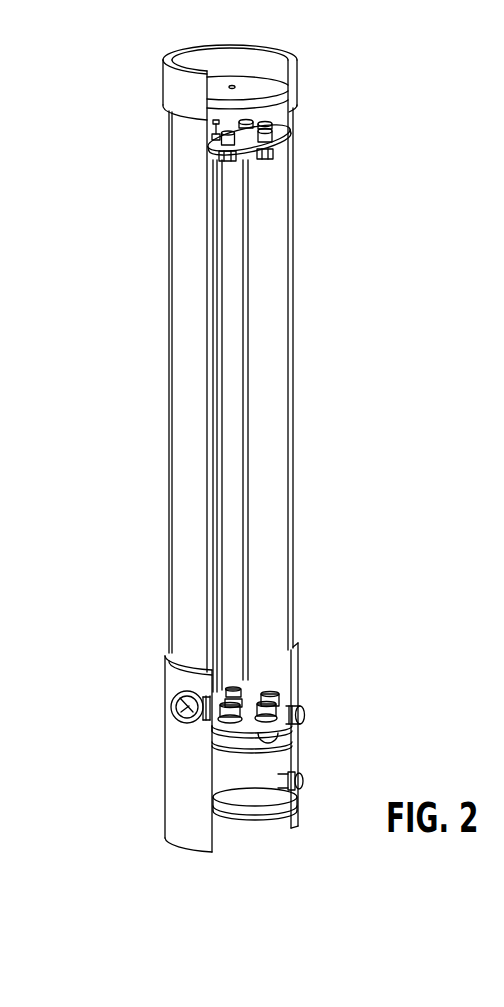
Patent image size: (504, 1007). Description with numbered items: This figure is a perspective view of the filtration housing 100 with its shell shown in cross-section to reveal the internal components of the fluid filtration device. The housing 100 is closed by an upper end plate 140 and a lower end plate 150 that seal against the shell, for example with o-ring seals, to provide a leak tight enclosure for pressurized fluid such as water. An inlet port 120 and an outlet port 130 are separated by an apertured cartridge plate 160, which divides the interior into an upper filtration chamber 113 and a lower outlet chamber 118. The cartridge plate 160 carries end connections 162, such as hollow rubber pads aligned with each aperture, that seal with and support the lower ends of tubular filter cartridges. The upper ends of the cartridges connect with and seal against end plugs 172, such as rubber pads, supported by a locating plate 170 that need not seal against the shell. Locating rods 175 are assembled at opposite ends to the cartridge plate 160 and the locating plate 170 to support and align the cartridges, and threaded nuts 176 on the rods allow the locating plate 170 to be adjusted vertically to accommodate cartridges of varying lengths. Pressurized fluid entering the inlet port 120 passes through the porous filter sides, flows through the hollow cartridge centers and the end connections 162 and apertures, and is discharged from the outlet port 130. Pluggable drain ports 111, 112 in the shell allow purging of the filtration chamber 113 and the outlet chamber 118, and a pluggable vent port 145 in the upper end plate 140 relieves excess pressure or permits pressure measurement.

The filtration housing 100 is at (400, 247).
The drain port 111 is at (301, 712).
The drain port 112 is at (302, 783).
The upper filtration chamber 113 is at (267, 473).
The lower outlet chamber 118 is at (240, 753).
The inlet port 120 is at (171, 726).
The outlet port 130 is at (262, 750).
The upper end plate 140 is at (278, 88).
The vent port 145 is at (234, 85).
The lower end plate 150 is at (268, 804).
The cartridge plate 160 is at (268, 731).
The end connections 162 is at (280, 704).
The locating plate 170 is at (280, 138).
The end plugs 172 is at (223, 162).
The locating rods 175 is at (217, 325).
The threaded nuts 176 is at (250, 121).